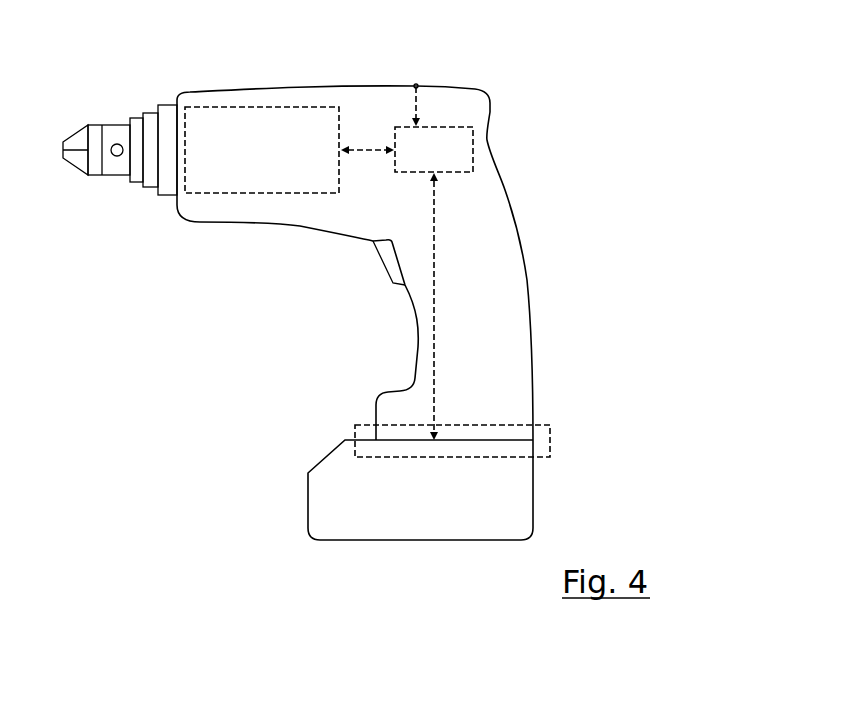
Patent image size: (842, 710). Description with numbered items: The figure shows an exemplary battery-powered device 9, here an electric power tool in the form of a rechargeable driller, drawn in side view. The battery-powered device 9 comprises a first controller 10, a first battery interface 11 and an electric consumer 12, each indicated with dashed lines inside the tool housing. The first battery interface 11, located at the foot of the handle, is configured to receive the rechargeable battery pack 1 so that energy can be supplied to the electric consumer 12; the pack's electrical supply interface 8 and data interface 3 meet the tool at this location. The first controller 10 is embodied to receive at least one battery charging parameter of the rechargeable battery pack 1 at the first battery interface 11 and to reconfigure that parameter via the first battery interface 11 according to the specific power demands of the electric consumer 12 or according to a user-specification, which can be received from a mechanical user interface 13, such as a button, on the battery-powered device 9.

The rechargeable battery pack 1 is at (328, 470).
The data interface 3 is at (551, 431).
The electrical supply interface 8 is at (512, 420).
The battery-powered device 9 is at (497, 89).
The first controller 10 is at (418, 163).
The first battery interface 11 is at (512, 420).
The electric consumer 12 is at (281, 163).
The mechanical user interface 13 is at (416, 85).